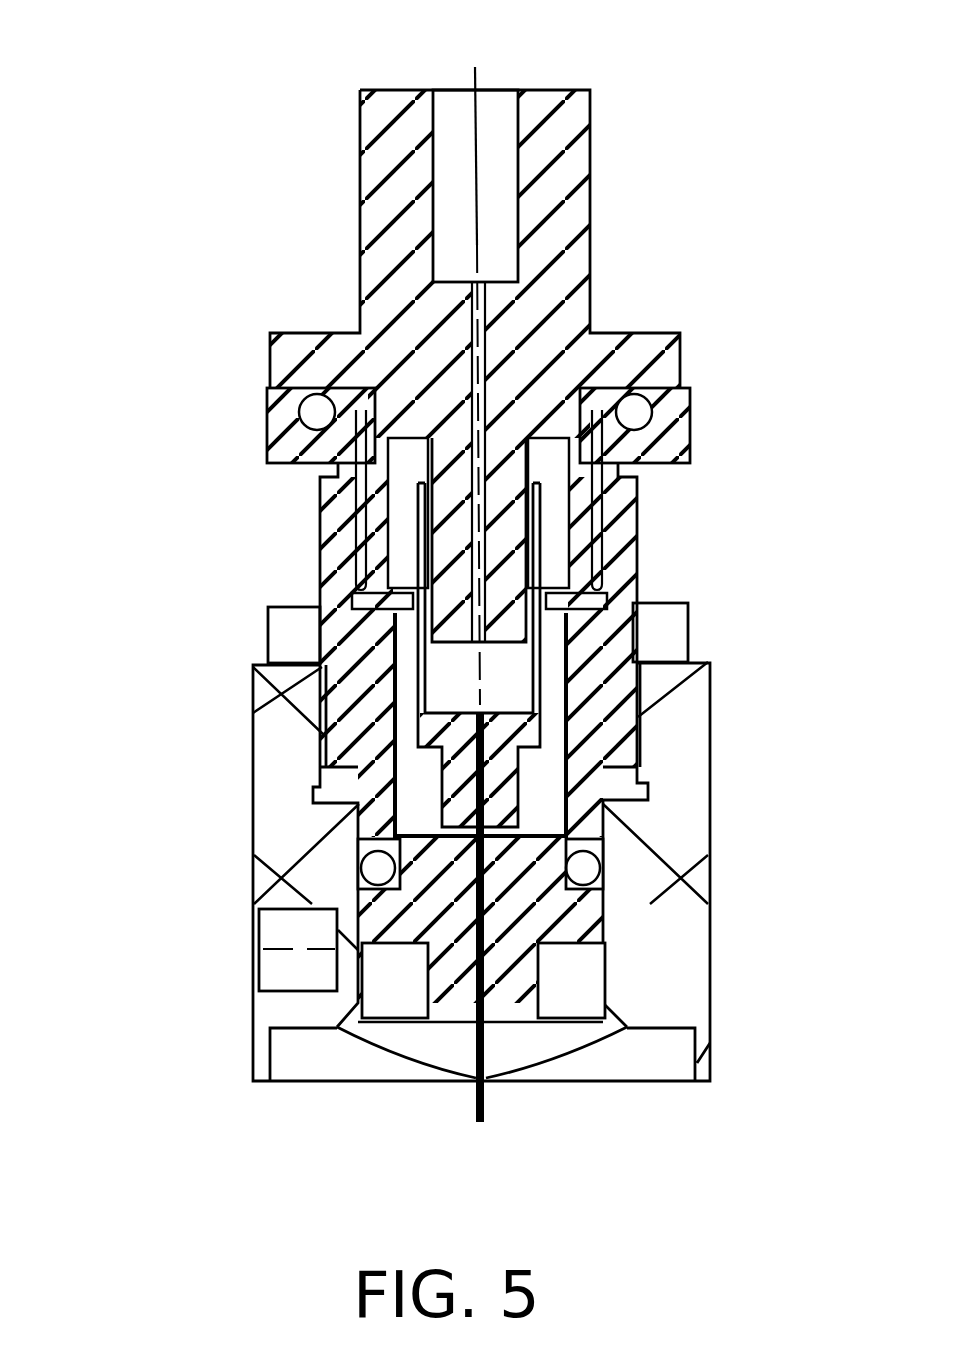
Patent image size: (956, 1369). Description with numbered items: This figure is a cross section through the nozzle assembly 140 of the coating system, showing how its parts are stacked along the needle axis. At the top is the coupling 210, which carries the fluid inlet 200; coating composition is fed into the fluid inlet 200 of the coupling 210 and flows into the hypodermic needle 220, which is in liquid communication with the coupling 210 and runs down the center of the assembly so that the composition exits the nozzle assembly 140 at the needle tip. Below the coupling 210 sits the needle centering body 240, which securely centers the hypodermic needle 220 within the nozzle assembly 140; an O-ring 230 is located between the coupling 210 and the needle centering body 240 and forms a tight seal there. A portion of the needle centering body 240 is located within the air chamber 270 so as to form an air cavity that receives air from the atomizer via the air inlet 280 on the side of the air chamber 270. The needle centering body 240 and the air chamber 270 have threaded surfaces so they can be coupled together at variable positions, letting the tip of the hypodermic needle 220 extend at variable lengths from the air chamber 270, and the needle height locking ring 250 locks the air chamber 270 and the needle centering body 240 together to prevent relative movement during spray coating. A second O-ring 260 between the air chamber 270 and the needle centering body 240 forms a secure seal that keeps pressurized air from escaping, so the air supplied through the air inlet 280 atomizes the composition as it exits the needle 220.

The nozzle assembly 140 is at (240, 70).
The fluid inlet 200 is at (495, 108).
The coupling 210 is at (590, 225).
The hypodermic needle 220 is at (485, 1110).
The O-ring 230 is at (655, 407).
The needle centering body 240 is at (640, 500).
The needle height locking ring 250 is at (690, 625).
The O-ring 260 is at (600, 860).
The air chamber 270 is at (267, 768).
The air inlet 280 is at (259, 950).